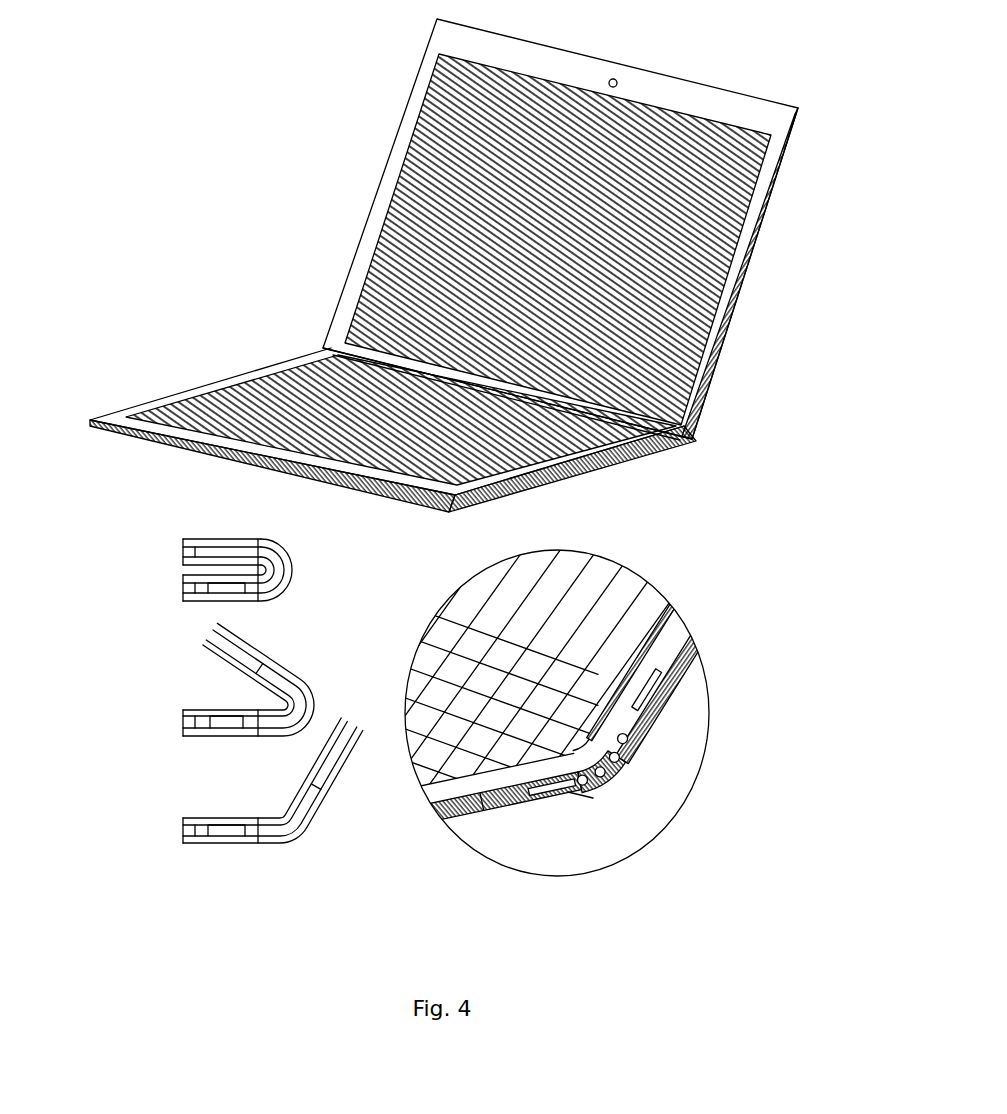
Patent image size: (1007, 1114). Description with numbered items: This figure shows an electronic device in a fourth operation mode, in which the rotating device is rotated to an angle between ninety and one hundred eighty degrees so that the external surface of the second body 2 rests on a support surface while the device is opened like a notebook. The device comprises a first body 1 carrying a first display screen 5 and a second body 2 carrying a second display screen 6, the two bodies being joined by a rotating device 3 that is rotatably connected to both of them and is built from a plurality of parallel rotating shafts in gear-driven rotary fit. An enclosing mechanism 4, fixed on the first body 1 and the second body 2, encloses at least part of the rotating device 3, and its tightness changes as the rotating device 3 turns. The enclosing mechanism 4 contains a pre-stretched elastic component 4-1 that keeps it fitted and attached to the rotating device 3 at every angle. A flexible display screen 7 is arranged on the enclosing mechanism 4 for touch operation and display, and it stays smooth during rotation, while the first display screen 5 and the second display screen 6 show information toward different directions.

The first body 1 is at (385, 160).
The second body 2 is at (252, 360).
The rotating device 3 is at (617, 760).
The enclosing mechanism 4 is at (583, 790).
The elastic component 4-1 is at (300, 588).
The first display screen 5 is at (447, 110).
The second display screen 6 is at (153, 397).
The flexible display screen 7 is at (325, 330).